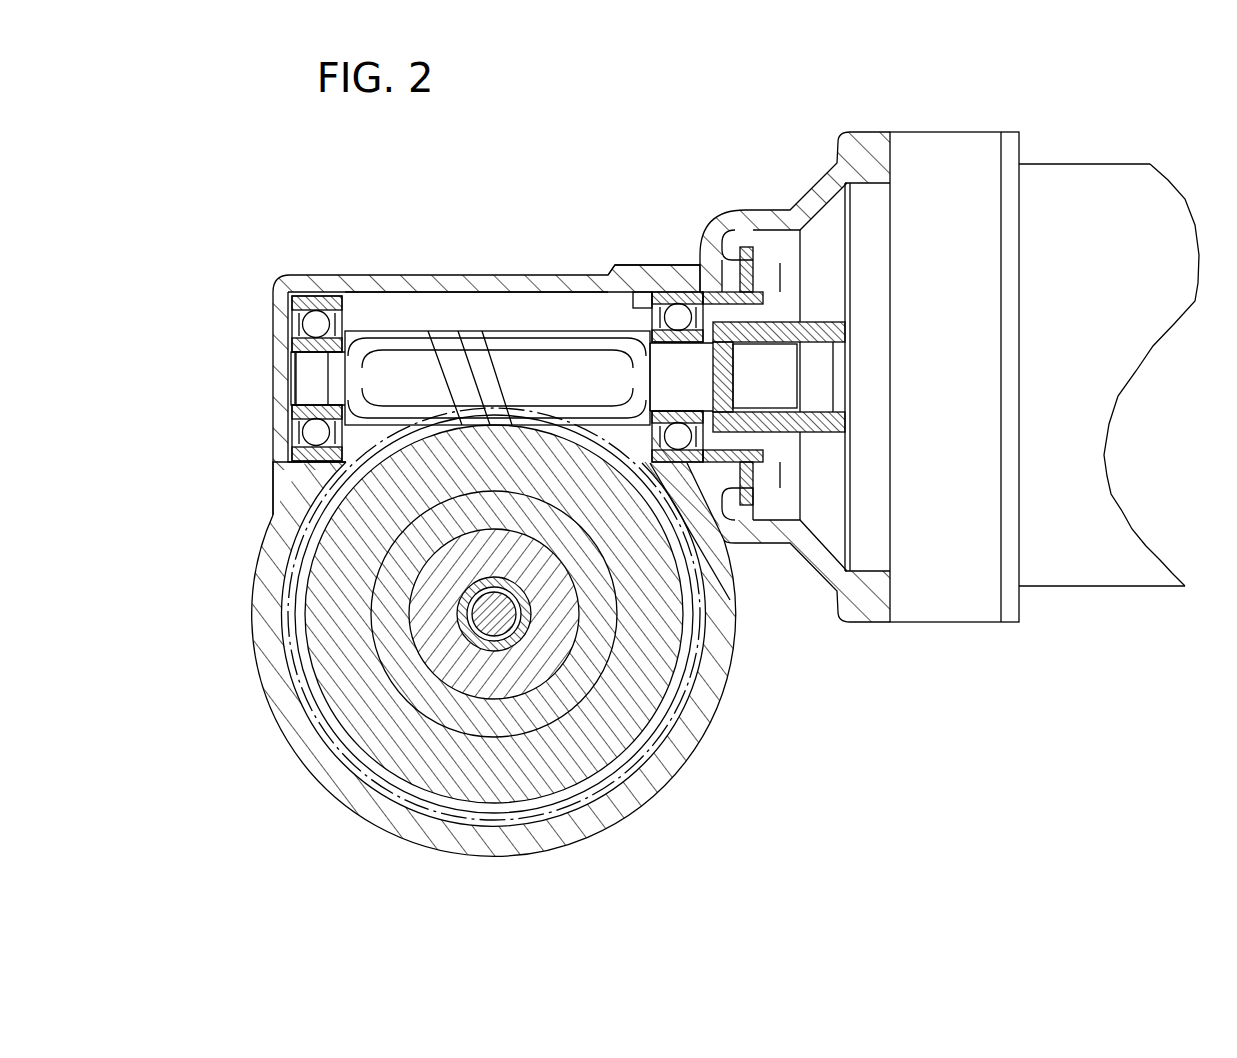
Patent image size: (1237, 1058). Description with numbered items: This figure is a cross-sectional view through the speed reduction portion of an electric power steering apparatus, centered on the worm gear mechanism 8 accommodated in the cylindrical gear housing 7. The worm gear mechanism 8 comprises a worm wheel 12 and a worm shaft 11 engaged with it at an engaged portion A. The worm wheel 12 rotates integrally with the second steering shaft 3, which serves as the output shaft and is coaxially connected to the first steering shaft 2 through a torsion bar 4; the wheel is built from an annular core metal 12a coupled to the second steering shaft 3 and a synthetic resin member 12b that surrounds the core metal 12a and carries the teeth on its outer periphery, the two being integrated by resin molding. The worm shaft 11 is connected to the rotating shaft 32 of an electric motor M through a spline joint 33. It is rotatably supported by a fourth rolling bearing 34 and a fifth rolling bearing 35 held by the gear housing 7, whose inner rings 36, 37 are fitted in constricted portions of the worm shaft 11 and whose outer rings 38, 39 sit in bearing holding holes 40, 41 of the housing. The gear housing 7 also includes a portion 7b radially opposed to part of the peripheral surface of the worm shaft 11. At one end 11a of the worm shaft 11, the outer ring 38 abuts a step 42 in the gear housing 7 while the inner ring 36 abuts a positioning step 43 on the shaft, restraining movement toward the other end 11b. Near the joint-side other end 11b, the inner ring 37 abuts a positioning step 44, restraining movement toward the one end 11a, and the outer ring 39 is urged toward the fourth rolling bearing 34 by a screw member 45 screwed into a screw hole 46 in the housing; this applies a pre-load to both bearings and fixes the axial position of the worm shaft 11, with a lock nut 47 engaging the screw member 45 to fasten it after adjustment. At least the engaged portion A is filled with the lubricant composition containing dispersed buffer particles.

The first steering shaft 2 is at (487, 647).
The second steering shaft 3 is at (443, 653).
The torsion bar 4 is at (500, 650).
The gear housing 7 is at (622, 803).
The portion opposed to the worm shaft 7b is at (450, 298).
The worm gear mechanism 8 is at (487, 313).
The worm shaft 11 is at (383, 327).
The one end of the worm shaft 11a is at (307, 375).
The other end of the worm shaft 11b is at (778, 373).
The worm wheel 12 is at (175, 675).
The core metal 12a is at (385, 650).
The synthetic resin member 12b is at (330, 710).
The rotating shaft 32 is at (830, 405).
The spline joint 33 is at (777, 400).
The fourth rolling bearing 34 is at (305, 300).
The fifth rolling bearing 35 is at (668, 330).
The inner ring 36 is at (297, 413).
The inner ring 37 is at (650, 395).
The outer ring 38 is at (320, 305).
The outer ring 39 is at (674, 300).
The bearing holding hole 40 is at (317, 460).
The bearing holding hole 41 is at (728, 620).
The step 42 is at (296, 312).
The positioning step 43 is at (297, 352).
The positioning step 44 is at (602, 313).
The screw member 45 is at (780, 277).
The screw hole 46 is at (745, 465).
The lock nut 47 is at (742, 250).
The engaged portion A is at (504, 410).
The electric motor M is at (1073, 160).